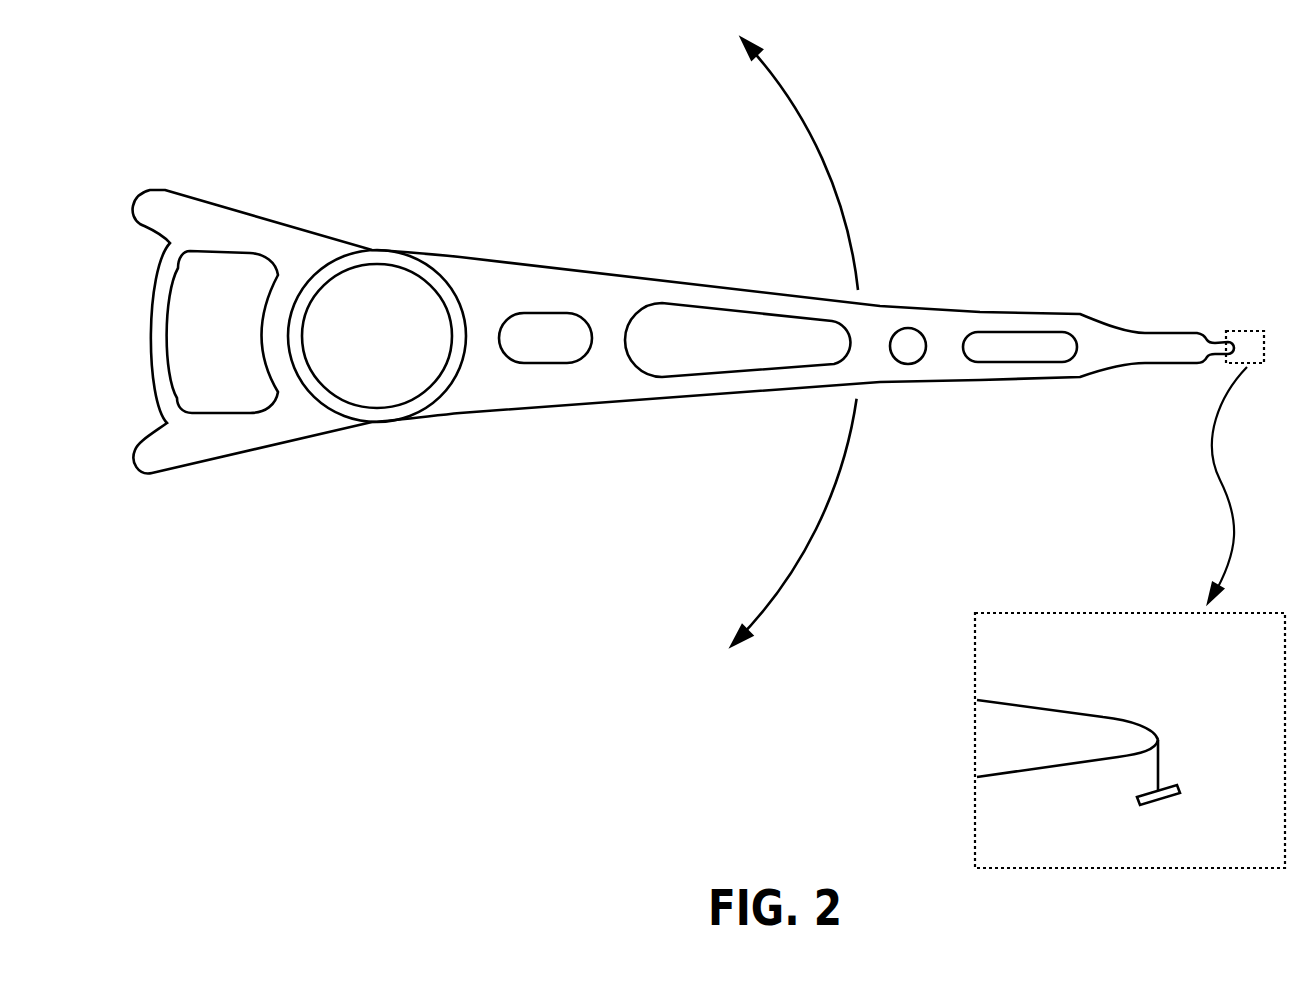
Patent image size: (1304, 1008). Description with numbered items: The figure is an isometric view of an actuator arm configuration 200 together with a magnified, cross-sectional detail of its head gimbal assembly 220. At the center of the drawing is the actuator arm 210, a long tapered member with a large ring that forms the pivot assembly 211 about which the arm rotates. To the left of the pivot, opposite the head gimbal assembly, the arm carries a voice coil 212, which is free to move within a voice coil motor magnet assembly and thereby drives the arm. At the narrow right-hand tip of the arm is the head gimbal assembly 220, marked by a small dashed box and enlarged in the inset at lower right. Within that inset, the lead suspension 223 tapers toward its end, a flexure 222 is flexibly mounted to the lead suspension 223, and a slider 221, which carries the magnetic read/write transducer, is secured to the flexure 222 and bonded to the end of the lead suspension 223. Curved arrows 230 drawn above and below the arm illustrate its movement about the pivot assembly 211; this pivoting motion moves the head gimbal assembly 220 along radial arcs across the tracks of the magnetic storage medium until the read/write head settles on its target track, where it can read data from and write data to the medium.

The actuator arm configuration 200 is at (709, 453).
The actuator arm 210 is at (583, 268).
The pivot assembly 211 is at (390, 260).
The voice coil 212 is at (240, 233).
The head gimbal assembly 220 is at (1130, 599).
The slider 221 is at (1137, 798).
The flexure 222 is at (1163, 768).
The lead suspension 223 is at (1033, 732).
The arrows 230 is at (832, 167).